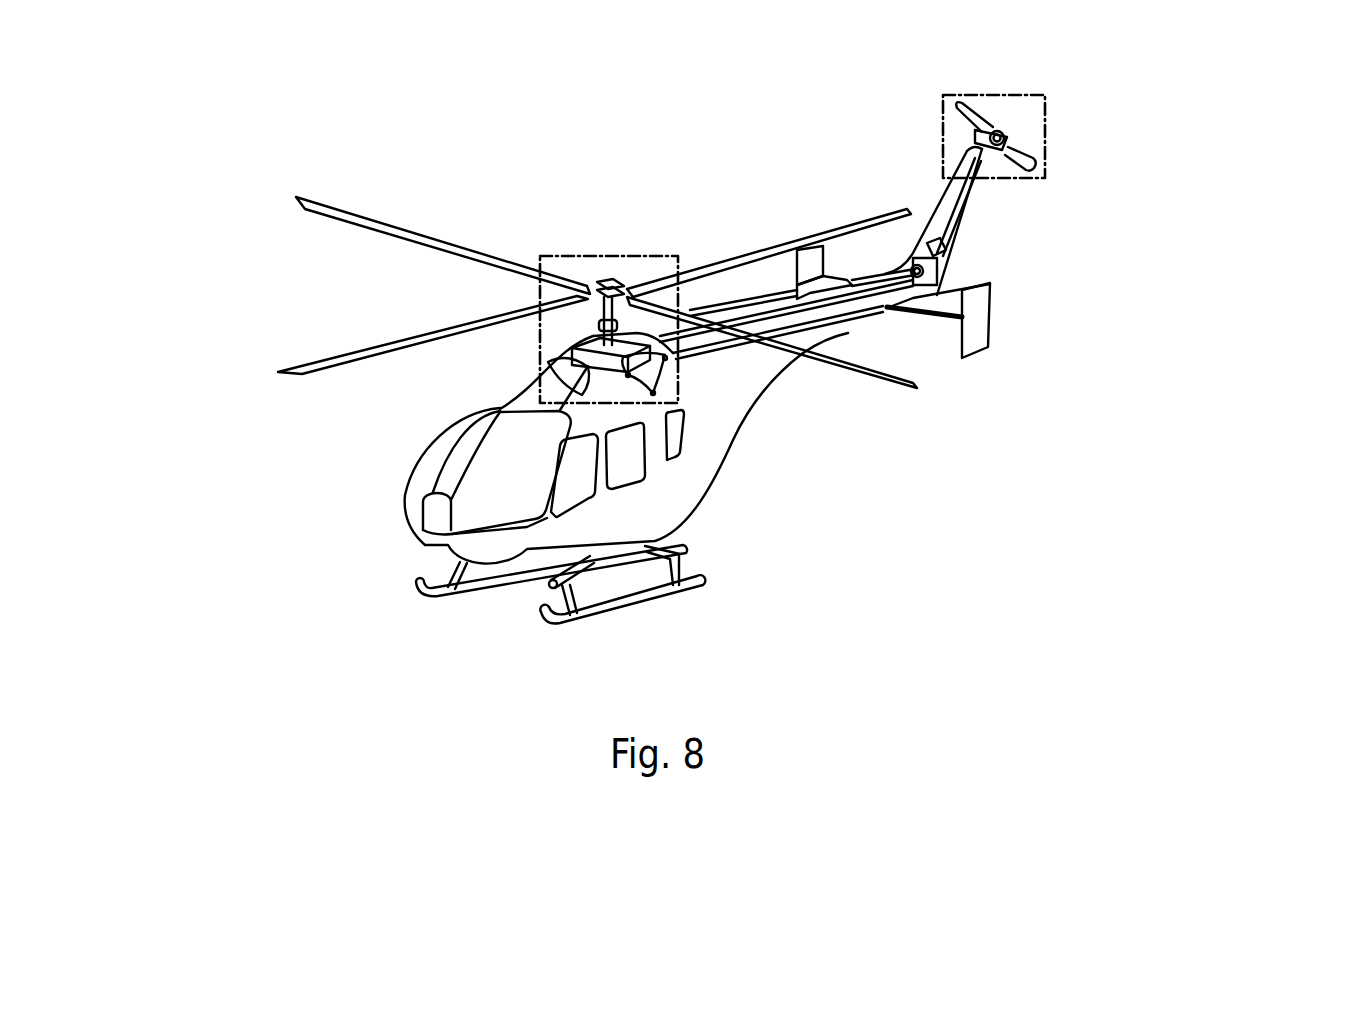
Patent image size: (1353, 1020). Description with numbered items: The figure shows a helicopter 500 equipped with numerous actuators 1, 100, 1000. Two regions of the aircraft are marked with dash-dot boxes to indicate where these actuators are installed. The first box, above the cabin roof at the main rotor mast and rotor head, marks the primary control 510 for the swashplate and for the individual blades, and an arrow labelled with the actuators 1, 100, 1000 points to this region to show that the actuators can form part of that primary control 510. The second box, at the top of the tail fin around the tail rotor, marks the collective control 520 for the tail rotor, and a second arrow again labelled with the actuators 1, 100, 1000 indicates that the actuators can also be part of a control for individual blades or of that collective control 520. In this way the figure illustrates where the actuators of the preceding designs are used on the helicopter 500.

The helicopter 500 is at (258, 261).
The primary control 510 is at (582, 256).
The collective control 520 is at (1045, 146).
The actuator 1 is at (690, 396).
The actuator 100 is at (1038, 187).
The actuator 1000 is at (900, 305).